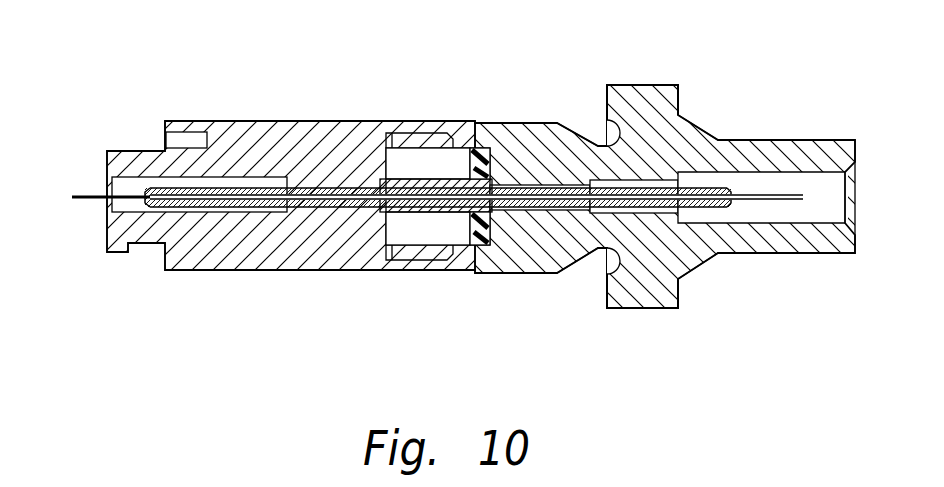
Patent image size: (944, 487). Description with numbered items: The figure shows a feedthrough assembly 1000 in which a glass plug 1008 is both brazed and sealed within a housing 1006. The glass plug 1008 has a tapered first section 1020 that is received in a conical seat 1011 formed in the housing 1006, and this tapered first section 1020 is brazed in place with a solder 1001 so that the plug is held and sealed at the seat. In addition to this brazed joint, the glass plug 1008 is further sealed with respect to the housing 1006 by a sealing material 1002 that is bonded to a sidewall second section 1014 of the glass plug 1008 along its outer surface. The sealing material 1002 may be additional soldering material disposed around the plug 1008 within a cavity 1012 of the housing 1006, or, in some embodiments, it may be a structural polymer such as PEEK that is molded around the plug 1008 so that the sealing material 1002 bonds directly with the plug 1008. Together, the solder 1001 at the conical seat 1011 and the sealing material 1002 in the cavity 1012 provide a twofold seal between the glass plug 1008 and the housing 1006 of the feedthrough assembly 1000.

The feedthrough assembly 1000 is at (152, 38).
The solder 1001 is at (492, 208).
The sealing material 1002 is at (474, 158).
The housing 1006 is at (639, 85).
The glass plug 1008 is at (411, 165).
The conical seat 1011 is at (488, 183).
The cavity 1012 is at (408, 236).
The sidewall second section 1014 is at (480, 172).
The tapered first section 1020 is at (490, 208).